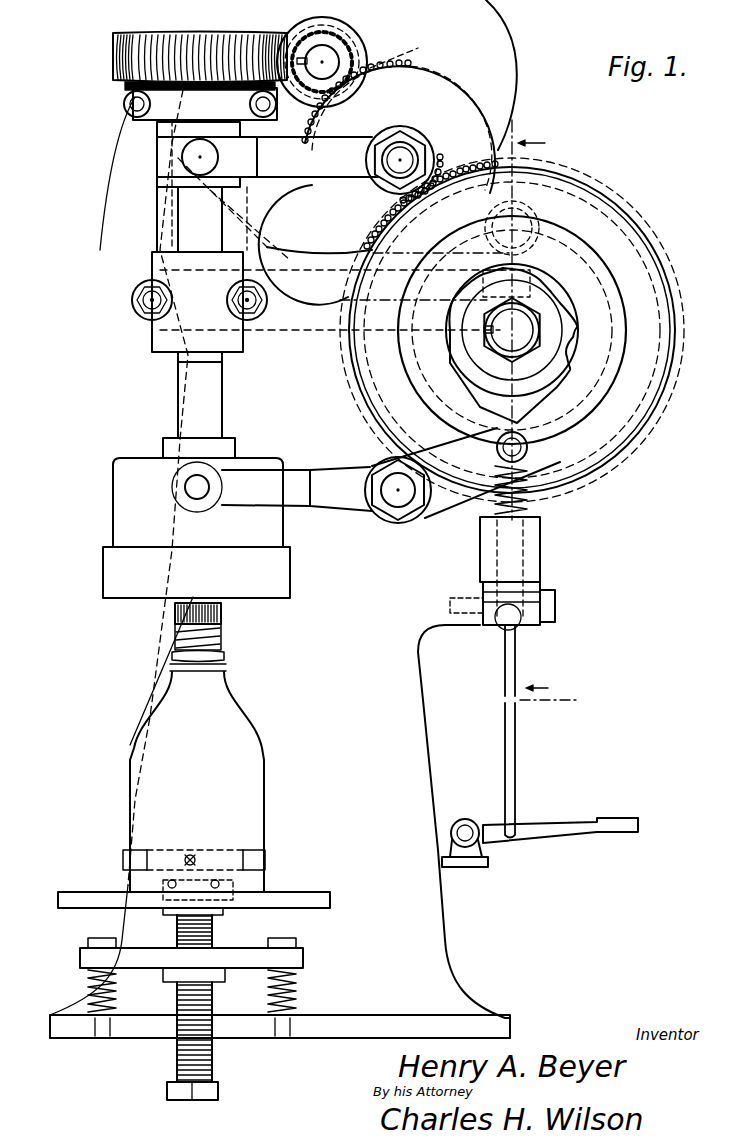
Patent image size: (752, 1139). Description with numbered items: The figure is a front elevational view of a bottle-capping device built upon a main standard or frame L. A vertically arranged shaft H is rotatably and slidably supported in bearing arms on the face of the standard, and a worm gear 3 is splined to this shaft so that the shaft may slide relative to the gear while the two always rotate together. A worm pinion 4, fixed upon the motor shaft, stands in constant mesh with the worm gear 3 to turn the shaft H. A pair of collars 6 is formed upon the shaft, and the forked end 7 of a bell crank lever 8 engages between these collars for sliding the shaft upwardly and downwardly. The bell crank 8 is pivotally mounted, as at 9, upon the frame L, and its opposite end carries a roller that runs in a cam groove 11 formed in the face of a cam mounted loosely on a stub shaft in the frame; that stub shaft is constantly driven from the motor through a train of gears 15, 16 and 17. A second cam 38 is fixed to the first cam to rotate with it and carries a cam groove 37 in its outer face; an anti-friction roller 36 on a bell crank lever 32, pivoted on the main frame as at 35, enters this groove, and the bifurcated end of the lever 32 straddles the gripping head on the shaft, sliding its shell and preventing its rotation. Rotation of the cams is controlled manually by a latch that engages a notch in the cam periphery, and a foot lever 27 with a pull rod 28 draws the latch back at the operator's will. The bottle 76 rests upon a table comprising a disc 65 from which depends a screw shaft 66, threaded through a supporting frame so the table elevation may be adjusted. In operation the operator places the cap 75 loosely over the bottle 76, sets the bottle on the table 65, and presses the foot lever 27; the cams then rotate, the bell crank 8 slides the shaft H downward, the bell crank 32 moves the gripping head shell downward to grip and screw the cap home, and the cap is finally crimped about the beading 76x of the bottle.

The worm gear 3 is at (222, 48).
The worm pinion 4 is at (338, 47).
The gear of the gear train 17 is at (378, 62).
The gear of the gear train 16 is at (456, 85).
The bell crank lever 8 is at (338, 152).
The pivot of bell crank 9 is at (404, 153).
The gear of the gear train 15 is at (437, 158).
The collars 6 is at (166, 128).
The forked end 7 is at (192, 157).
The cam groove 11 is at (605, 230).
The cam 38 is at (633, 357).
The cam groove 37 is at (578, 424).
The anti-friction roller 36 is at (526, 463).
The bell crank lever 32 is at (330, 500).
The pivot of bell crank lever 35 is at (398, 500).
The cap 75 is at (215, 638).
The bottle neck rings 76x is at (222, 668).
The bottle 76 is at (245, 747).
The disc 65 is at (302, 900).
The screw shaft 66 is at (214, 929).
The pull rod 28 is at (508, 750).
The foot lever 27 is at (523, 835).
The vertically arranged shaft H is at (200, 395).
The main standard or frame L is at (390, 716).